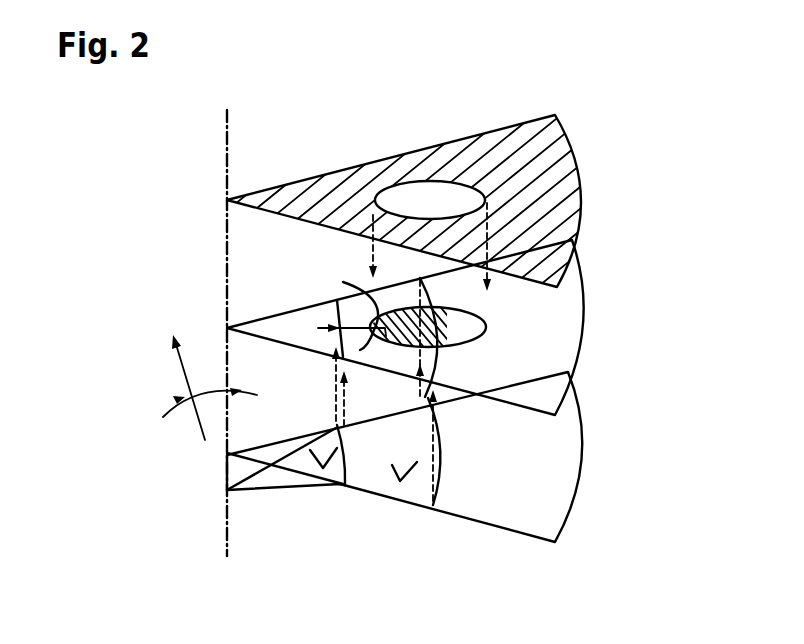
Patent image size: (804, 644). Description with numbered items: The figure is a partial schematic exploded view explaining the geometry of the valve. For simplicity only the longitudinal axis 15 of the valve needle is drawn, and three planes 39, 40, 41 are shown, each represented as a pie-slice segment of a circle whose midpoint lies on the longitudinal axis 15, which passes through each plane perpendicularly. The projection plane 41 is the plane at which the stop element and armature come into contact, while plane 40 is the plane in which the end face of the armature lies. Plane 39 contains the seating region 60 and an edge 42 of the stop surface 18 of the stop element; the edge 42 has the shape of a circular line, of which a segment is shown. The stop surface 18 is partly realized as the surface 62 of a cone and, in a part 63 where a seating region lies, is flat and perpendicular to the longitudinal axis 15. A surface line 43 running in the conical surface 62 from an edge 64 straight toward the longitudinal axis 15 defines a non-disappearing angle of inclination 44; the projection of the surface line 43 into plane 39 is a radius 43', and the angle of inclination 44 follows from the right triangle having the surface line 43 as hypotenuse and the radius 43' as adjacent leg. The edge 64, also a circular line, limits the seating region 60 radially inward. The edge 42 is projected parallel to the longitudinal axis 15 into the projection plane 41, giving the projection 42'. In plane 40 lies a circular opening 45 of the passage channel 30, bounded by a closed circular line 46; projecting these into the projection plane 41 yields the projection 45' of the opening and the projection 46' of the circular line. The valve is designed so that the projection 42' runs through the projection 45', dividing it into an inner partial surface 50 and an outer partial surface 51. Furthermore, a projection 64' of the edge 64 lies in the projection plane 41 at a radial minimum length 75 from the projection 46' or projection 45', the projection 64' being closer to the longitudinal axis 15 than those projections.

The longitudinal axis 15 is at (227, 154).
The stop surface 18 is at (354, 535).
The passage channel 30 is at (428, 141).
The plane 39 is at (557, 472).
The plane 40 is at (553, 180).
The projection plane 41 is at (553, 323).
The edge 42 is at (480, 501).
The projection of edge 42' is at (550, 339).
The surface line 43 is at (285, 434).
The radius 43' is at (224, 395).
The angle of inclination 44 is at (207, 385).
The opening 45 is at (428, 141).
The projection of opening 45' is at (403, 305).
The circular line 46 is at (468, 177).
The projection of circular line 46' is at (548, 339).
The inner partial surface 50 is at (322, 330).
The outer partial surface 51 is at (453, 328).
The seating region 60 is at (372, 468).
The conical surface part 62 is at (318, 448).
The flat part 63 is at (414, 463).
The edge 64 is at (325, 524).
The projection of edge 64' is at (238, 317).
The radial minimum length 75 is at (352, 283).